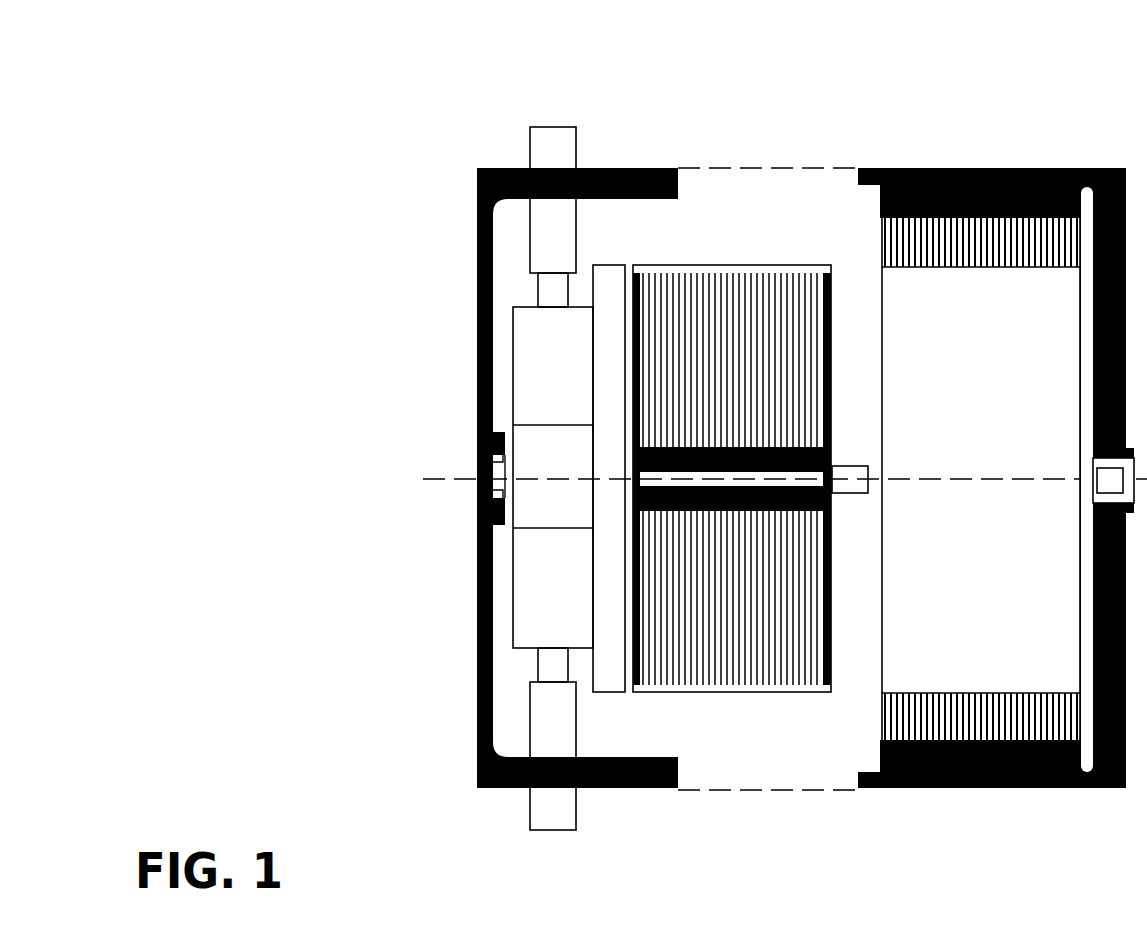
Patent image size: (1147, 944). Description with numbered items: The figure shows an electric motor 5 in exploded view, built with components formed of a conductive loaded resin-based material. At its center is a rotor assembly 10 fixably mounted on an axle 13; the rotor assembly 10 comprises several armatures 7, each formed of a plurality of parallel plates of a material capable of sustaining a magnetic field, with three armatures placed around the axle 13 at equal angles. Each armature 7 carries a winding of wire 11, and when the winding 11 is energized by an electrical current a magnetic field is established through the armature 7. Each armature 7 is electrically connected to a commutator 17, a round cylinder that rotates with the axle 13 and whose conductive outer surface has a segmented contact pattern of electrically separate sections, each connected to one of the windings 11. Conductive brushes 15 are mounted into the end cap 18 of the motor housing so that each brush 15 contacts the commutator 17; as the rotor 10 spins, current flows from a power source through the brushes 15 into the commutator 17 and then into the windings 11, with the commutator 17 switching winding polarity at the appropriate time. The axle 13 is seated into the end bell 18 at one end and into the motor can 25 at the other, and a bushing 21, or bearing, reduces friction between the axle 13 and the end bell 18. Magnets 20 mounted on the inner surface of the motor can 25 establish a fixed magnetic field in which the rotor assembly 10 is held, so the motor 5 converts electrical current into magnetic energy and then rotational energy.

The electric motor 5 is at (350, 53).
The armature 7 is at (723, 287).
The rotor assembly 10 is at (683, 690).
The winding of wire 11 is at (823, 280).
The axle 13 is at (477, 490).
The conductive brush 15 is at (547, 294).
The commutator 17 is at (537, 570).
The end cap 18 is at (477, 170).
The magnets 20 is at (893, 248).
The bushing 21 is at (477, 460).
The motor housing 25 is at (1045, 168).